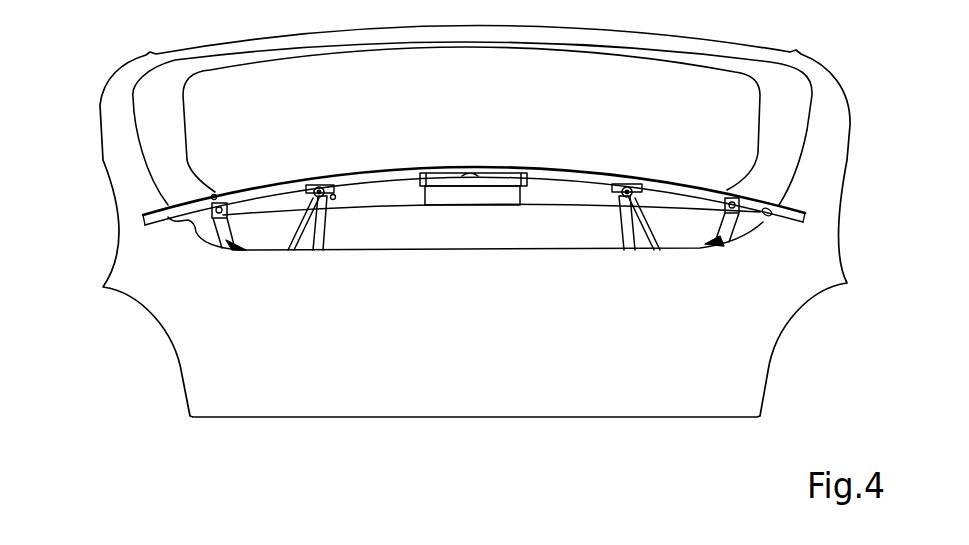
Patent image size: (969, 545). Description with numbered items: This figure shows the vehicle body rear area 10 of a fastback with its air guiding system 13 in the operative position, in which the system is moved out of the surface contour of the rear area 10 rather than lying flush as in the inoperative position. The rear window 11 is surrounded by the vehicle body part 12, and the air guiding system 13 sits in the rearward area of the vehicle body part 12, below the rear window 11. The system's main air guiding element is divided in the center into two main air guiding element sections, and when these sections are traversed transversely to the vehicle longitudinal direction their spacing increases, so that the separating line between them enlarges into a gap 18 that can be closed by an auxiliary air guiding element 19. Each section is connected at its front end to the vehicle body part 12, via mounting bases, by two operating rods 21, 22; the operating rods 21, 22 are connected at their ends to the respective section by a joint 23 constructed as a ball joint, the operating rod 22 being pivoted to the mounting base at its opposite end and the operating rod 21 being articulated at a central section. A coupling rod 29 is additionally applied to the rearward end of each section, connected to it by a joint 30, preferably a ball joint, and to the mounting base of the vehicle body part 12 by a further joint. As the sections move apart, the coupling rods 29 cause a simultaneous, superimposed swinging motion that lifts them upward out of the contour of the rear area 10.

The vehicle body rear area 10 is at (163, 400).
The rear window 11 is at (478, 105).
The vehicle body part 12 is at (113, 237).
The air guiding system 13 is at (557, 168).
The gap 18 is at (502, 168).
The auxiliary air guiding element 19 is at (490, 180).
The operating rod 21 is at (223, 227).
The operating rod 22 is at (320, 230).
The joint 23 is at (213, 193).
The coupling rod 29 is at (293, 224).
The joint 30 is at (319, 187).